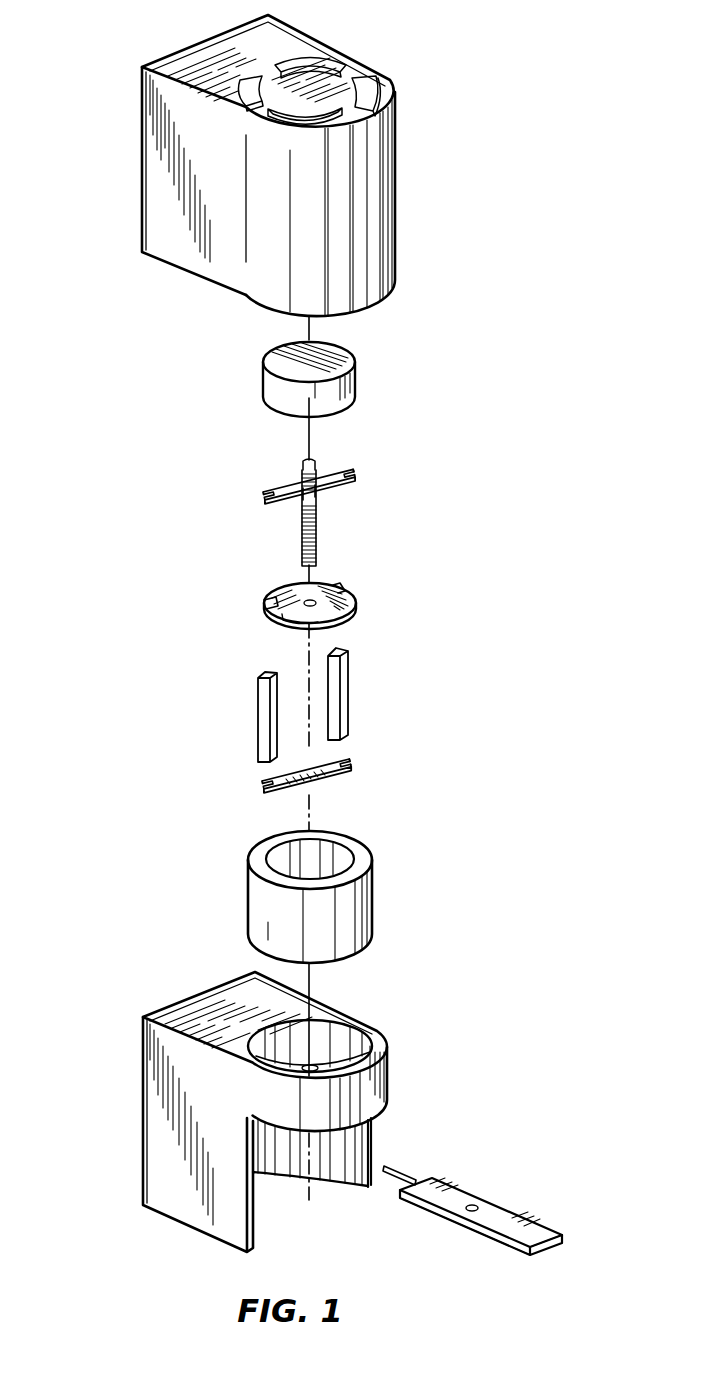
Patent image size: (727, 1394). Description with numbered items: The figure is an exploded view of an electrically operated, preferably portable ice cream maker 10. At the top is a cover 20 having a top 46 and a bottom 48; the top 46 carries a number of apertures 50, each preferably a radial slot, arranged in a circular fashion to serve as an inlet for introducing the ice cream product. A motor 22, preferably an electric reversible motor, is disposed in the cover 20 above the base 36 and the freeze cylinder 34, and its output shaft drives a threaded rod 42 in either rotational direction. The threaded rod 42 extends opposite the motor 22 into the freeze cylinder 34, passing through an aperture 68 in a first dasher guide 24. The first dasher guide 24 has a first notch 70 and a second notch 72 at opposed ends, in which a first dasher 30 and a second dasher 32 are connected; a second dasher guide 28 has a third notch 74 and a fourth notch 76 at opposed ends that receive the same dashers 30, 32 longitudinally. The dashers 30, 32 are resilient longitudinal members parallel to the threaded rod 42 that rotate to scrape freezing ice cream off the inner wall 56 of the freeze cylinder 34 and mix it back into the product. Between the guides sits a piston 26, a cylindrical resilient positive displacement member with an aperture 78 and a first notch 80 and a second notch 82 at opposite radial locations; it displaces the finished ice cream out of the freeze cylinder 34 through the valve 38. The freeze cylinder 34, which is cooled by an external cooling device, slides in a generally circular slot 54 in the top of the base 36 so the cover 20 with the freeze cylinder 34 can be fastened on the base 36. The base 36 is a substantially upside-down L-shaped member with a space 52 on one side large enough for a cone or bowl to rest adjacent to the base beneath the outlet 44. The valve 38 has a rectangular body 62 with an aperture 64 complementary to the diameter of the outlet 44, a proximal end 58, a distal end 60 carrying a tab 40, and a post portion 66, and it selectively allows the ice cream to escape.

The ice cream maker 10 is at (528, 262).
The cover 20 is at (397, 162).
The motor 22 is at (357, 382).
The first dasher guide 24 is at (369, 482).
The piston 26 is at (367, 617).
The second dasher guide 28 is at (355, 768).
The first dasher 30 is at (262, 693).
The second dasher 32 is at (345, 685).
The freeze cylinder 34 is at (371, 888).
The base 36 is at (152, 1108).
The valve 38 is at (543, 1208).
The tab 40 is at (543, 1252).
The threaded rod 42 is at (317, 535).
The outlet 44 is at (385, 1052).
The top 46 is at (268, 29).
The bottom 48 is at (177, 225).
The apertures 50 is at (371, 90).
The space 52 is at (298, 1152).
The slot 54 is at (338, 1048).
The inner wall 56 is at (316, 865).
The proximal end 58 is at (563, 1243).
The distal end 60 is at (447, 1167).
The rectangular body 62 is at (465, 1222).
The aperture 64 is at (482, 1205).
The post portion 66 is at (402, 1168).
The aperture 68 is at (296, 479).
The first notch 70 is at (268, 499).
The second notch 72 is at (340, 471).
The third notch 74 is at (263, 783).
The fourth notch 76 is at (347, 755).
The aperture 78 is at (289, 624).
The first notch 80 is at (270, 597).
The second notch 82 is at (343, 590).